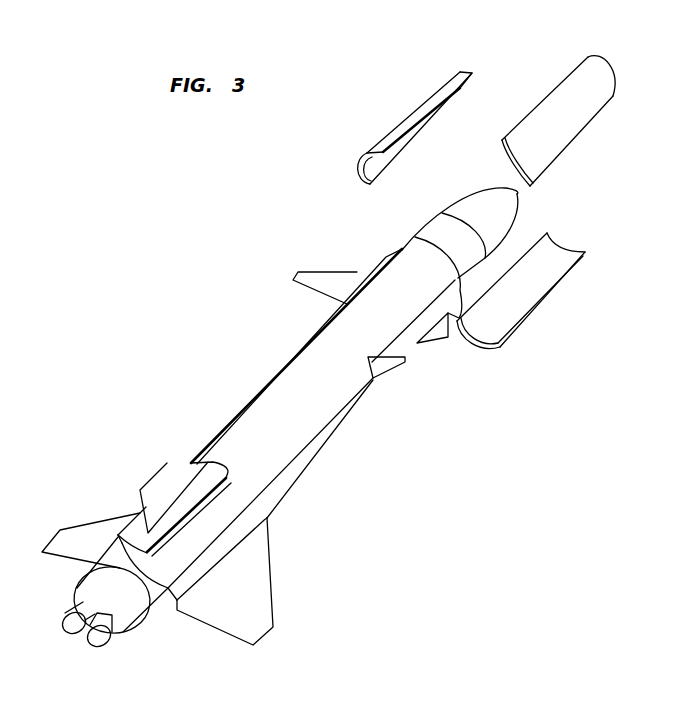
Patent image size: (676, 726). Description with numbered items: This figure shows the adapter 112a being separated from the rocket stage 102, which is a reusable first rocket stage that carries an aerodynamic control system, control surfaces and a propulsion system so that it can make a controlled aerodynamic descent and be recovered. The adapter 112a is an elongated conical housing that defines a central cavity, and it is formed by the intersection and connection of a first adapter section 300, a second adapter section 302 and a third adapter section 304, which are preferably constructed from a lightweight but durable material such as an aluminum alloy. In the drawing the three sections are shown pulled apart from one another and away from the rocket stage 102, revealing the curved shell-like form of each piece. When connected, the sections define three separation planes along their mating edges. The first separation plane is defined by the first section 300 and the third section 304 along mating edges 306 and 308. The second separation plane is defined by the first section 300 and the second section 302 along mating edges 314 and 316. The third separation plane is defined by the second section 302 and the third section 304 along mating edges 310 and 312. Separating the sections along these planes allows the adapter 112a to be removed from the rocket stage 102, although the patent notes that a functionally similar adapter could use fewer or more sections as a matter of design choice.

The rocket stage 102 is at (222, 370).
The adapter 112a is at (415, 125).
The first adapter section 300 is at (536, 96).
The second adapter section 302 is at (544, 292).
The third adapter section 304 is at (418, 125).
The mating edge 306 is at (468, 82).
The mating edge 308 is at (578, 57).
The mating edge 310 is at (403, 152).
The mating edge 312 is at (546, 236).
The mating edge 314 is at (547, 170).
The mating edge 316 is at (586, 254).